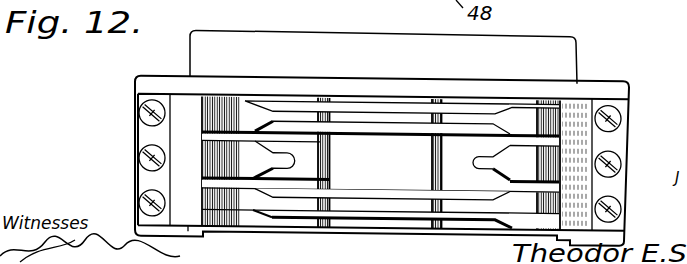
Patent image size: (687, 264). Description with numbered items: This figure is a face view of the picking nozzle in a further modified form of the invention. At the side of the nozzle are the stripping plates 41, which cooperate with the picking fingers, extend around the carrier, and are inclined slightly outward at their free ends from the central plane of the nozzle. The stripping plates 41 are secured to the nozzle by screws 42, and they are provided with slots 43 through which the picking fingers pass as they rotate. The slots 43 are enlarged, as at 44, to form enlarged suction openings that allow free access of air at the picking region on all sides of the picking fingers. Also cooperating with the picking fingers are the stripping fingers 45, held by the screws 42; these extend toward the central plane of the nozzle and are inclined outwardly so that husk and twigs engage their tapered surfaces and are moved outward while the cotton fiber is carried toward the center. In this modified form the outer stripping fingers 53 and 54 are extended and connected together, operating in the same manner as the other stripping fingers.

The stripping plate 41 is at (443, 178).
The screw 42 is at (138, 197).
The slot 43 is at (310, 134).
The enlarged suction opening 44 is at (227, 137).
The stripping finger 45 is at (473, 163).
The outer stripping finger 53 is at (390, 116).
The outer stripping finger 54 is at (373, 203).